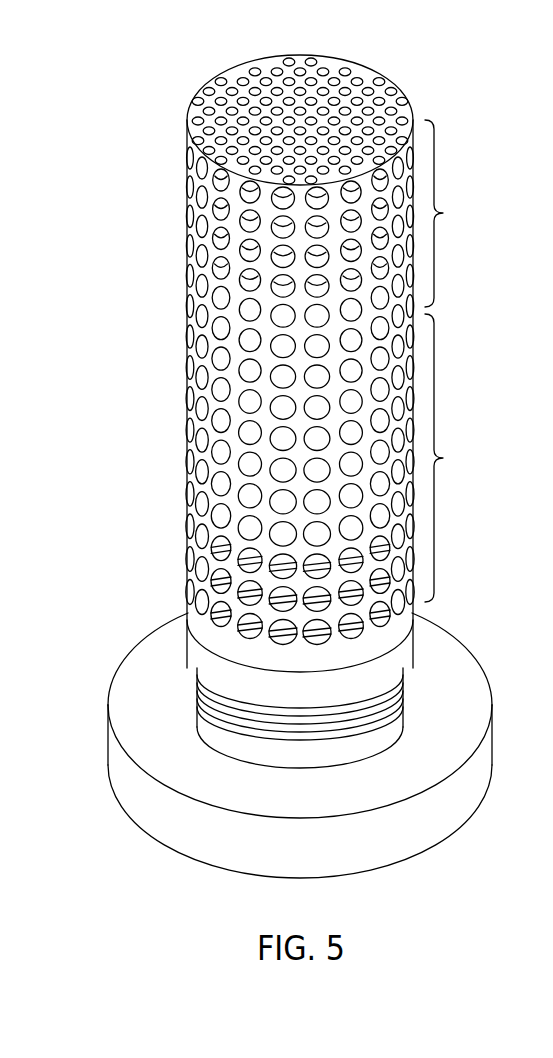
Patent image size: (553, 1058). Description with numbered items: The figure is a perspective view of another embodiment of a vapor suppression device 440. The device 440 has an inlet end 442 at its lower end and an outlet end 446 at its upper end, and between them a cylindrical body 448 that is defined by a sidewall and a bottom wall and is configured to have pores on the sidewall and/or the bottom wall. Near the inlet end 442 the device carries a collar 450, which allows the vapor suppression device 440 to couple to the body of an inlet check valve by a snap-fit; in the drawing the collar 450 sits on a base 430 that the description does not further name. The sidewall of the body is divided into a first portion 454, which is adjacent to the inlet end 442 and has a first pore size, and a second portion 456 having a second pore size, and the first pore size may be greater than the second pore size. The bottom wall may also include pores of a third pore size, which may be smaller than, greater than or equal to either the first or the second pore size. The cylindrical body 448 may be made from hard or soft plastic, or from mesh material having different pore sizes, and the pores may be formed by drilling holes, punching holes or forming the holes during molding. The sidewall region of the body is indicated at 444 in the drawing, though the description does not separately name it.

The base 430 is at (471, 708).
The vapor suppression device 440 is at (315, 355).
The inlet end 442 is at (200, 622).
The side wall of cylindrical member 444 is at (180, 436).
The outlet end 446 is at (234, 68).
The cylindrical body 448 is at (215, 243).
The collar 450 is at (386, 661).
The first portion 454 is at (480, 348).
The second portion 456 is at (455, 213).